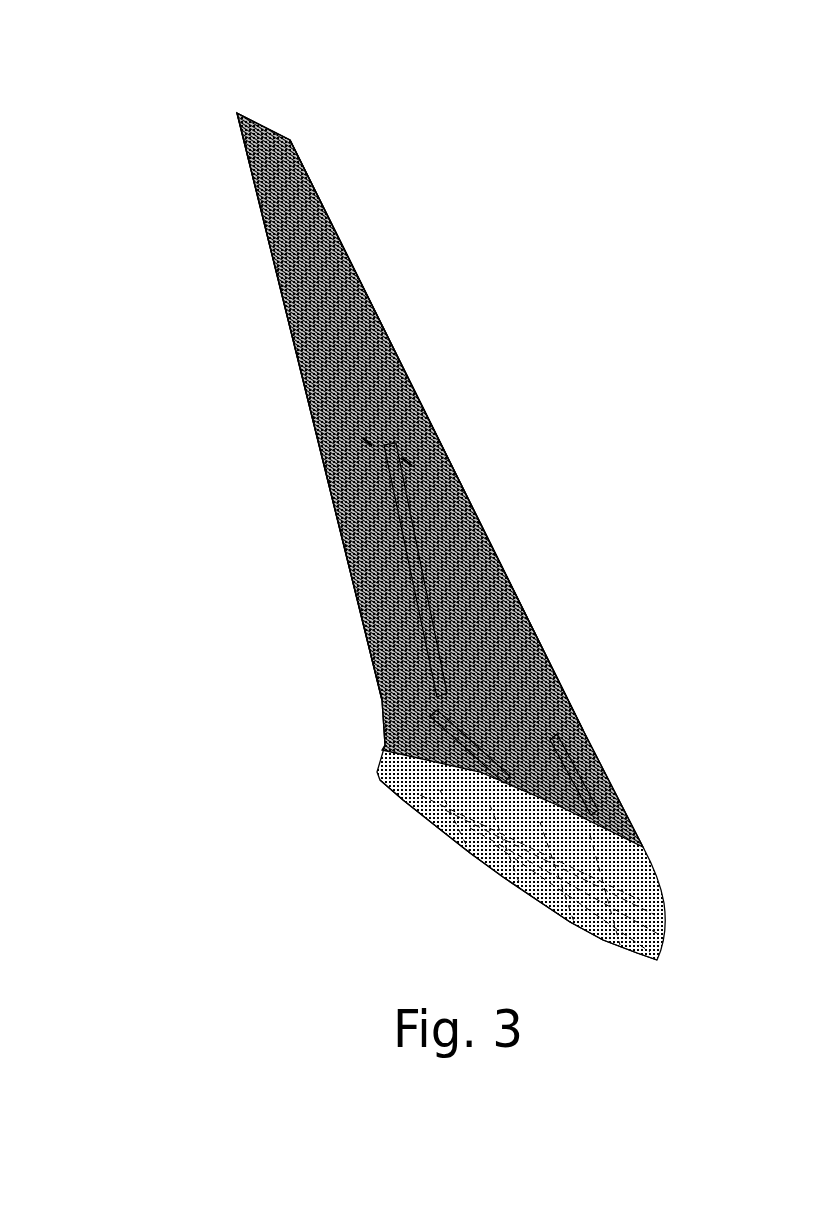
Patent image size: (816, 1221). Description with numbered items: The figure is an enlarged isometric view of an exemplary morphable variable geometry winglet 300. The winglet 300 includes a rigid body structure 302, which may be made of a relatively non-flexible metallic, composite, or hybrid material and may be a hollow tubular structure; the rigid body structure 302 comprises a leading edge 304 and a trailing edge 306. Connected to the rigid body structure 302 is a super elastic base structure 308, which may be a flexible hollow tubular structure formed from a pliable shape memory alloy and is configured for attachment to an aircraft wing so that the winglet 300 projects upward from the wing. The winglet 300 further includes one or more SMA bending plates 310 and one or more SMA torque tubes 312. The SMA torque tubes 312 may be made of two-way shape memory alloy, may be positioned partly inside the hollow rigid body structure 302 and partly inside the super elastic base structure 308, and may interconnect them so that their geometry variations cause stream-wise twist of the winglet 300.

The morphable variable geometry winglet 300 is at (355, 491).
The rigid body structure 302 is at (378, 407).
The leading edge 304 is at (385, 330).
The trailing edge 306 is at (256, 231).
The super elastic base structure 308 is at (460, 808).
The SMA bending plate 310 is at (405, 547).
The SMA torque tube 312 is at (590, 810).